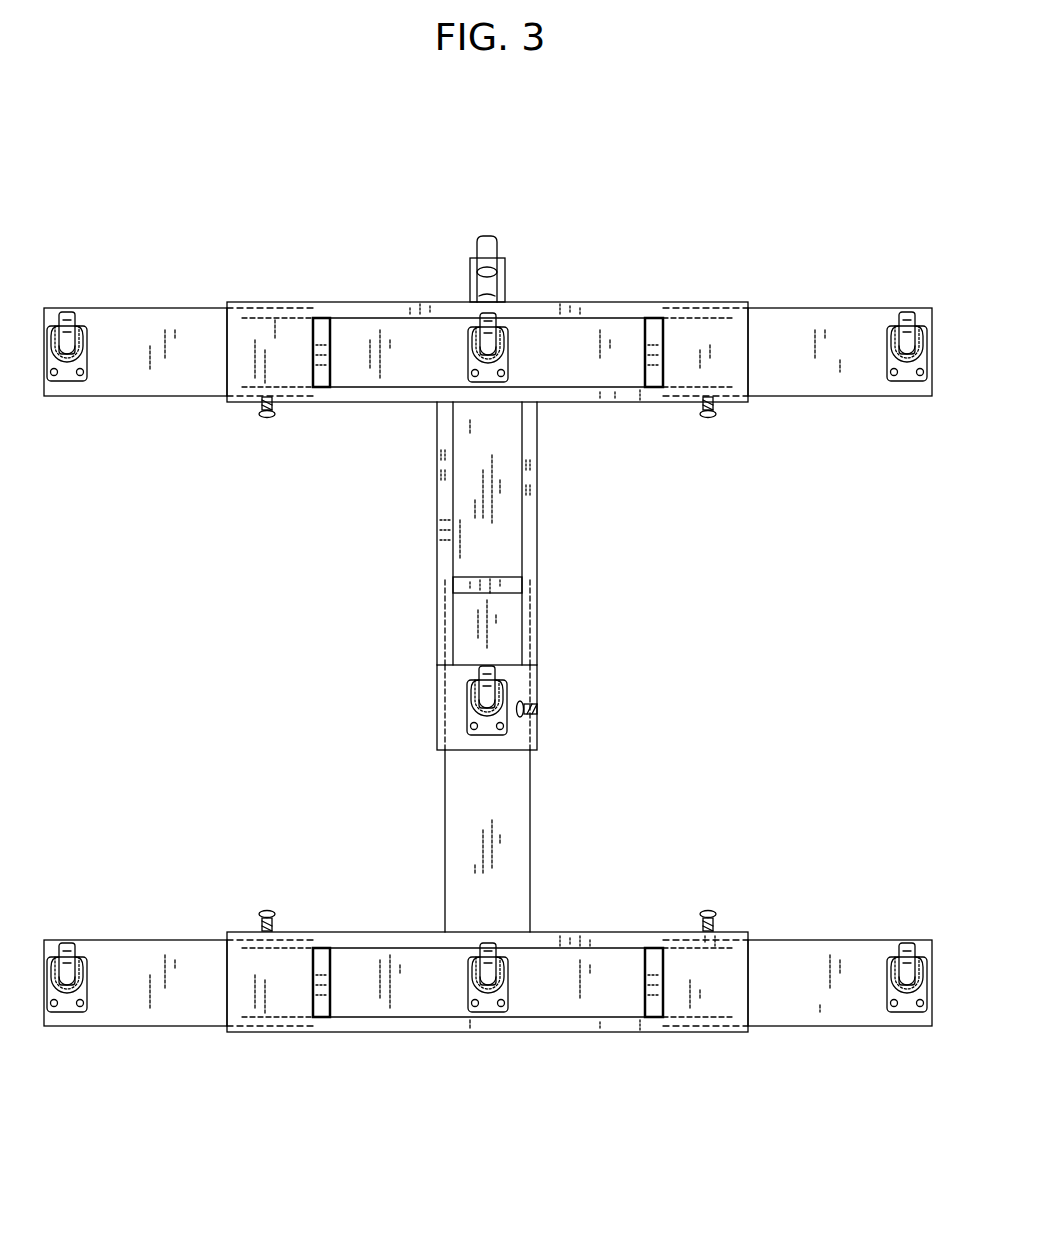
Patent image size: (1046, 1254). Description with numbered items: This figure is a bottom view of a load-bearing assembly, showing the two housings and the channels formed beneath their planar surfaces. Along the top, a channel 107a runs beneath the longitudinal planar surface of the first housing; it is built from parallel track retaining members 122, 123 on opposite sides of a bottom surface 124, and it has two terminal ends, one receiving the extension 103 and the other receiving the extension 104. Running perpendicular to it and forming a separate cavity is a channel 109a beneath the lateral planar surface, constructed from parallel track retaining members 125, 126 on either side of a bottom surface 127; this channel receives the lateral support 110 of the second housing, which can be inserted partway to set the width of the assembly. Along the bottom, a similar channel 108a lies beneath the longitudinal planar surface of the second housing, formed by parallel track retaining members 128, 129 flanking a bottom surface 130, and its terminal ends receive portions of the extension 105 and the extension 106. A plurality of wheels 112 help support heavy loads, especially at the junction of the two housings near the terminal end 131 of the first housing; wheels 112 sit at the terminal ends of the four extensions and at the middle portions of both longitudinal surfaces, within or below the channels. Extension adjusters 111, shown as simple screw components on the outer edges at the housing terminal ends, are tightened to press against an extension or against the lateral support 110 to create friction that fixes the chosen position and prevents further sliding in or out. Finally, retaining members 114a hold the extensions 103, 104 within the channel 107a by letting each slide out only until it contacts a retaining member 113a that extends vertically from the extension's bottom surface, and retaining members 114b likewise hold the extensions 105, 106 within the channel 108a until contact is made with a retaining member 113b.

The extension 103 is at (935, 178).
The extension 104 is at (338, 178).
The extension 105 is at (935, 1092).
The extension 106 is at (338, 1092).
The channel 107a is at (420, 340).
The channel 108a is at (432, 996).
The channel 109a is at (505, 553).
The lateral support 110 is at (530, 850).
The extension adjuster 111 is at (272, 414).
The wheel 112 is at (75, 312).
The retaining member 113a is at (320, 320).
The retaining member 113b is at (320, 1017).
The retaining member 114a is at (237, 374).
The retaining member 114b is at (236, 1005).
The track retaining member 122 is at (540, 302).
The track retaining member 123 is at (432, 398).
The bottom surface 124 is at (560, 378).
The track retaining member 125 is at (446, 505).
The track retaining member 126 is at (530, 568).
The bottom surface 127 is at (466, 545).
The track retaining member 128 is at (540, 932).
The track retaining member 129 is at (452, 1030).
The bottom surface 130 is at (413, 948).
The terminal end 131 is at (457, 745).